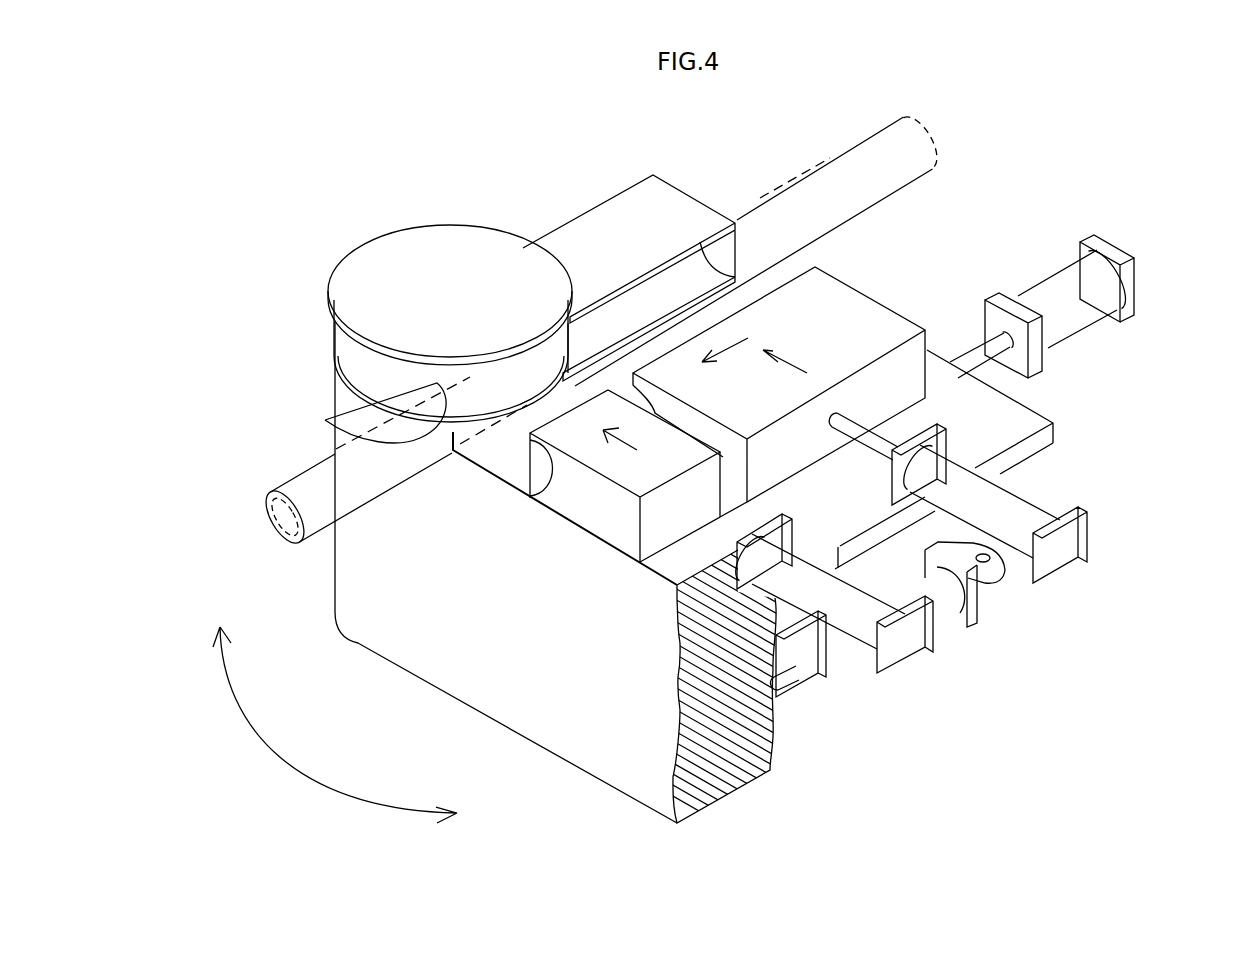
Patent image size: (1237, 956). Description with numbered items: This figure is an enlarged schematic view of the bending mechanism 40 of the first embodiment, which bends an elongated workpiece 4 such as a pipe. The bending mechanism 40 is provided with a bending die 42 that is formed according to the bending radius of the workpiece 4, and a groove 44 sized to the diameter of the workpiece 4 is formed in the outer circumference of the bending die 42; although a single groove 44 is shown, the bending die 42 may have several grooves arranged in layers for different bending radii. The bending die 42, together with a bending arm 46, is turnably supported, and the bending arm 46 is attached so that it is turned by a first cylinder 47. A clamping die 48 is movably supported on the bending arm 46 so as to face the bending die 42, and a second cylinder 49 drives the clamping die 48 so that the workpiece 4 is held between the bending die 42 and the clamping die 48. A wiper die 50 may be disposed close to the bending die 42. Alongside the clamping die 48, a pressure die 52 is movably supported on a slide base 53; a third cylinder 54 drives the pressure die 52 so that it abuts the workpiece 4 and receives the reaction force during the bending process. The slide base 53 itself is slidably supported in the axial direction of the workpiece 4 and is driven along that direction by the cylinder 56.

The workpiece 4 is at (838, 178).
The bending mechanism 40 is at (518, 198).
The bending die 42 is at (357, 303).
The groove 44 is at (325, 420).
The bending arm 46 is at (385, 575).
The first cylinder 47 is at (967, 628).
The clamping die 48 is at (590, 495).
The second cylinder 49 is at (848, 612).
The wiper die 50 is at (618, 220).
The pressure die 52 is at (845, 305).
The slide base 53 is at (1020, 413).
The third cylinder 54 is at (1010, 496).
The cylinder 56 is at (1053, 290).